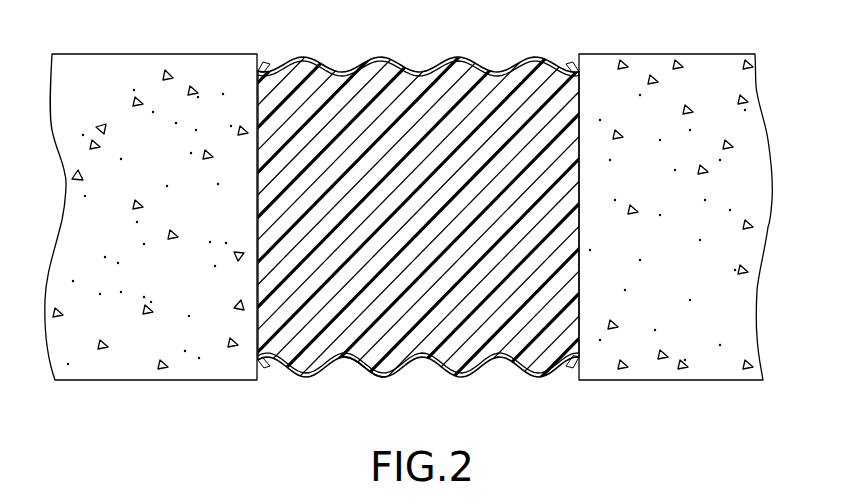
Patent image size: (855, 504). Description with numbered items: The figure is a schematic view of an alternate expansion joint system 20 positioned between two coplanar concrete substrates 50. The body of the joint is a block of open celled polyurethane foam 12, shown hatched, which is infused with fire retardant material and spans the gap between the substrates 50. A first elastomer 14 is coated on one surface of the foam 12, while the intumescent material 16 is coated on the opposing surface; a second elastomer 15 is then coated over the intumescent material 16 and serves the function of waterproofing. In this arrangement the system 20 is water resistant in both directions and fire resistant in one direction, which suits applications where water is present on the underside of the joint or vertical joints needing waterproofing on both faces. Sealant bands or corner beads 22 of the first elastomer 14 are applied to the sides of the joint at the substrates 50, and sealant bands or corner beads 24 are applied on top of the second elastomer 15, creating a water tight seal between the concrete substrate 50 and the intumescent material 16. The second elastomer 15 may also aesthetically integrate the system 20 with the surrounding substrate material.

The open celled polyurethane foam 12 is at (455, 75).
The first elastomer 14 is at (372, 57).
The second elastomer 15 is at (458, 382).
The intumescent material 16 is at (362, 380).
The expansion joint system 20 is at (590, 442).
The sealant bands and/or corner beads 22 is at (267, 58).
The sealant bands and/or corner beads 24 is at (265, 382).
The concrete substrate 50 is at (138, 53).